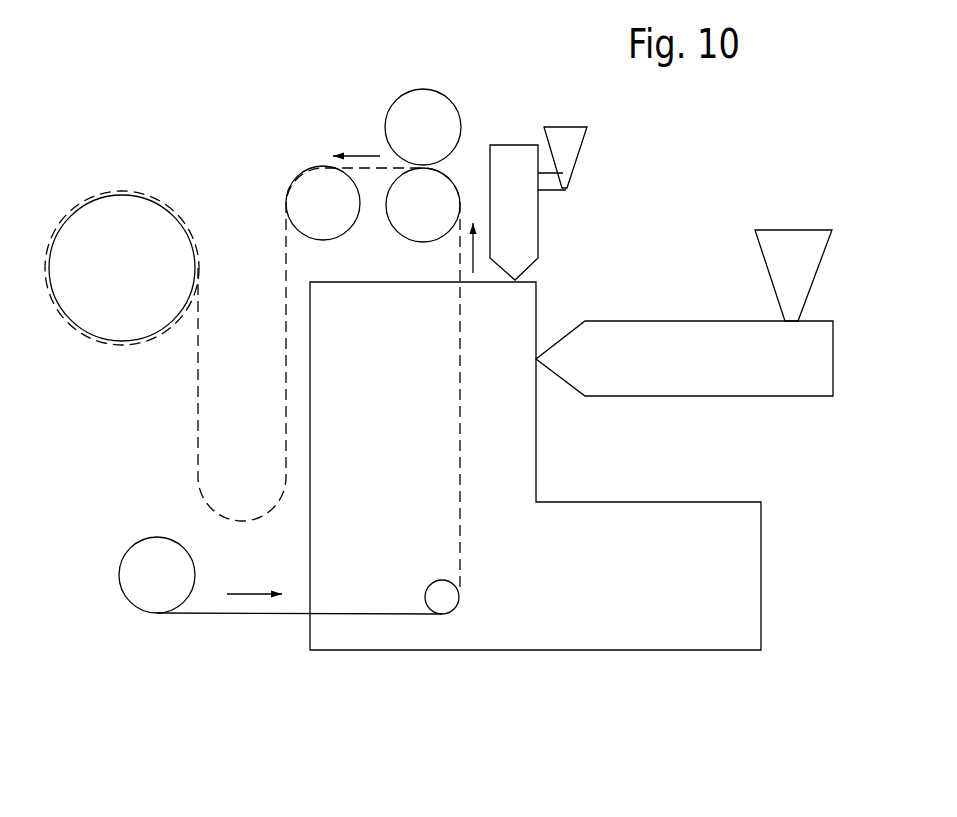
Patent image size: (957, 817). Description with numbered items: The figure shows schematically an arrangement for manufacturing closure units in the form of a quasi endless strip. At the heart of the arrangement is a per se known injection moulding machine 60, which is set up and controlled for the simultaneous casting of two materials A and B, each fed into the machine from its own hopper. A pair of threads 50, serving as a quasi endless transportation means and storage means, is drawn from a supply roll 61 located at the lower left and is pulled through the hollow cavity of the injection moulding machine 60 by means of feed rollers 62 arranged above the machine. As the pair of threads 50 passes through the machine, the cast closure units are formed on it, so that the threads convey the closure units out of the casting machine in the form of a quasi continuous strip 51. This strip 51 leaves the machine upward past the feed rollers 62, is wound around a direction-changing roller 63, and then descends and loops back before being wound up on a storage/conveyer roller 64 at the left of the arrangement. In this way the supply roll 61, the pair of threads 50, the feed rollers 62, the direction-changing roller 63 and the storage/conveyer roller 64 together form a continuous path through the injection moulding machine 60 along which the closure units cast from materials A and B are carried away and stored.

The pair of threads 50 is at (248, 612).
The quasi continuous strip 51 is at (280, 262).
The injection moulding machine 60 is at (722, 498).
The supply roll 61 is at (133, 588).
The feed rollers 62 is at (382, 125).
The direction-changing roller 63 is at (297, 170).
The storage/conveyer roller 64 is at (82, 342).
The material A is at (563, 120).
The material B is at (793, 222).